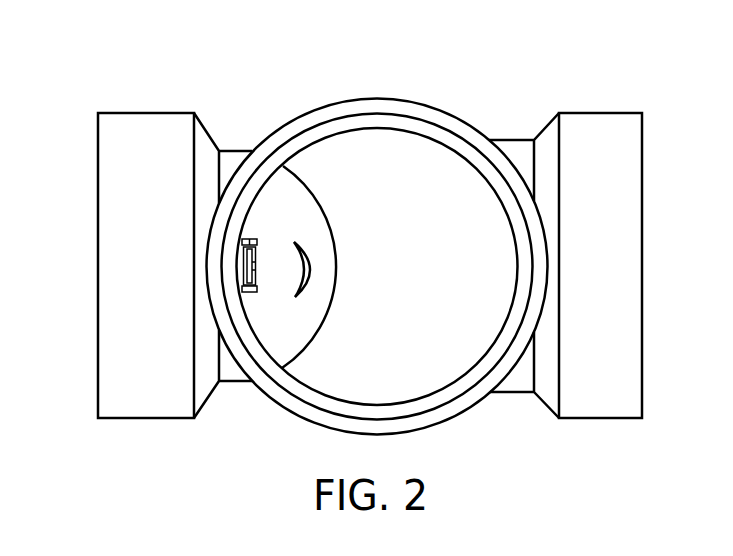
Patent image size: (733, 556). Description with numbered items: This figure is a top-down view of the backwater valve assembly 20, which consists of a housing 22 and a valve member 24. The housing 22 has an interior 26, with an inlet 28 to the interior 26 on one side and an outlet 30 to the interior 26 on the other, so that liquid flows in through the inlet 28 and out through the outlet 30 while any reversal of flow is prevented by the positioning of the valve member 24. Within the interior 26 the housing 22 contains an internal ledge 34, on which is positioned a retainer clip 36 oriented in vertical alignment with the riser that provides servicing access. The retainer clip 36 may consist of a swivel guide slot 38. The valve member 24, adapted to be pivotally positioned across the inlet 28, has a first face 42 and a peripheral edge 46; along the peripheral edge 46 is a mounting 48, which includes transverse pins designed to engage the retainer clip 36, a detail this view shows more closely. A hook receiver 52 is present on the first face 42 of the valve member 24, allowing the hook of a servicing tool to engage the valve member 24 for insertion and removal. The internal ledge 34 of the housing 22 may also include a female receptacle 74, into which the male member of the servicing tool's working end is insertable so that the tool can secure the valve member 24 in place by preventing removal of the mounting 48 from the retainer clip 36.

The backwater valve assembly 20 is at (338, 209).
The housing 22 is at (448, 117).
The valve member 24 is at (297, 327).
The interior 26 is at (430, 376).
The inlet 28 is at (141, 418).
The outlet 30 is at (600, 418).
The internal ledge 34 is at (252, 294).
The retainer clip 36 is at (242, 242).
The swivel guide slot 38 is at (250, 279).
The first face 42 is at (287, 205).
The peripheral edge 46 is at (243, 264).
The mounting 48 is at (249, 268).
The hook receiver 52 is at (310, 258).
The female receptacle 74 is at (249, 239).